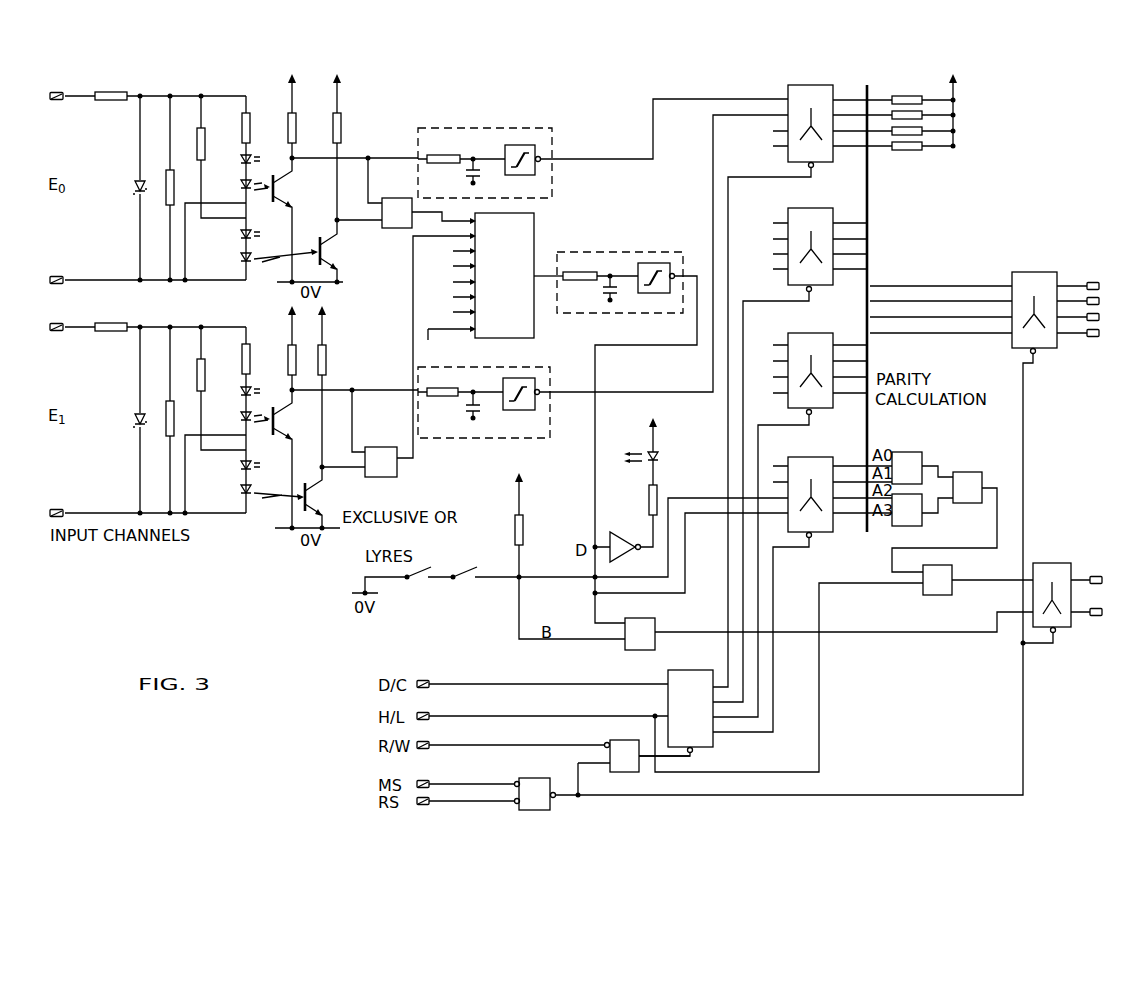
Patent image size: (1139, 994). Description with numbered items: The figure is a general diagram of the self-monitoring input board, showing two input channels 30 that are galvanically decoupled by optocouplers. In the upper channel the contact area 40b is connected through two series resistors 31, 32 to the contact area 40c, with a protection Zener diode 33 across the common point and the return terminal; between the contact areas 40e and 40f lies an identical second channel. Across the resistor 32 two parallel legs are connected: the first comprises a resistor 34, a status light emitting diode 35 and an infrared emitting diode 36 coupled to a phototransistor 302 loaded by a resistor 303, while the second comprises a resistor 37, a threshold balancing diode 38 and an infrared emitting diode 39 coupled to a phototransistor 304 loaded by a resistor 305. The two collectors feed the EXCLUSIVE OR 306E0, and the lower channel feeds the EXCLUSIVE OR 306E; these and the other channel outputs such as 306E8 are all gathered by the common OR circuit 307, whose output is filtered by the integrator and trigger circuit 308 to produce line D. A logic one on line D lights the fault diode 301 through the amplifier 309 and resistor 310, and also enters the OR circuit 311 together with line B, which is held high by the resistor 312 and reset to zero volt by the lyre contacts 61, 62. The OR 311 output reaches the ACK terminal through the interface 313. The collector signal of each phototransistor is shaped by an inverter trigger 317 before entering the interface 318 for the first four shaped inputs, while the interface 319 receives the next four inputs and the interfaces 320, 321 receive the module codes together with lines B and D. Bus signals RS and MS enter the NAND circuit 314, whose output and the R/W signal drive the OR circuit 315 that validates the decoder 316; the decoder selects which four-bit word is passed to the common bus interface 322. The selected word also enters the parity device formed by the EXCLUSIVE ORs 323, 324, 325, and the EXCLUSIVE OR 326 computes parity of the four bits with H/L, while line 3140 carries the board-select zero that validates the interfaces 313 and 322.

The input channel 30 is at (176, 82).
The series resistor 31 is at (96, 93).
The series resistor 32 is at (168, 186).
The protection Zener diode 33 is at (134, 421).
The resistor 34 is at (239, 358).
The light emitting diode 35 is at (243, 275).
The infrared emitting diode 36 is at (248, 300).
The resistor 37 is at (198, 142).
The threshold balancing diode 38 is at (243, 350).
The infrared emitting diode 39 is at (272, 374).
The contact area 40b is at (57, 84).
The contact area 40c is at (56, 269).
The contact area 40e is at (57, 316).
The contact area 40f is at (55, 502).
The contact (lyre) 61 is at (418, 585).
The contact (lyre) 62 is at (464, 585).
The light emitting diode 301 is at (658, 457).
The phototransistor 302 is at (301, 212).
The resistor 303 is at (308, 105).
The phototransistor 304 is at (341, 212).
The resistor 305 is at (352, 105).
The EXCLUSIVE OR circuit 306E0 is at (382, 228).
The EXCLUSIVE OR circuit 306E8 is at (444, 347).
The EXCLUSIVE OR circuit 306E is at (366, 478).
The OR circuit 307 is at (534, 238).
The filter circuit 308 is at (594, 252).
The amplifier 309 is at (636, 536).
The resistor 310 is at (649, 501).
The OR circuit 311 is at (625, 620).
The resistor 312 is at (513, 537).
The interface circuit 313 is at (1064, 563).
The NAND circuit 314 is at (517, 779).
The OR circuit 315 is at (606, 748).
The decoder circuit 316 is at (671, 674).
The inverter trigger circuit 317 is at (494, 128).
The interface circuit 318 is at (798, 85).
The interface circuit 319 is at (798, 208).
The interface circuit 320 is at (798, 333).
The interface circuit 321 is at (798, 457).
The bus interface circuit 322 is at (1023, 272).
The EXCLUSIVE OR circuit 323 is at (898, 452).
The EXCLUSIVE OR circuit 324 is at (918, 528).
The EXCLUSIVE OR circuit 325 is at (954, 472).
The EXCLUSIVE OR circuit 326 is at (951, 565).
The line 3140 is at (764, 797).